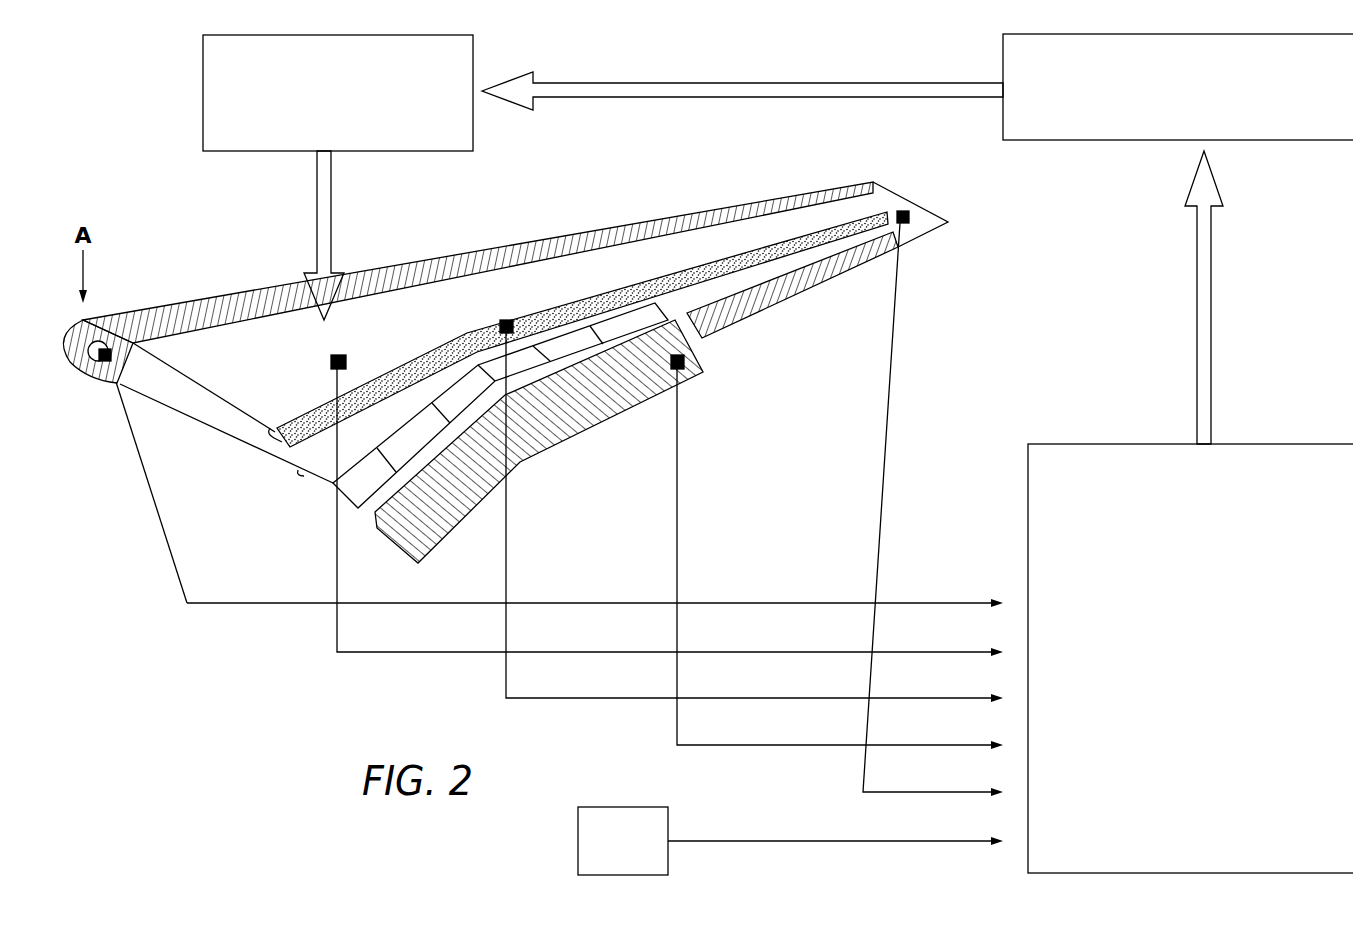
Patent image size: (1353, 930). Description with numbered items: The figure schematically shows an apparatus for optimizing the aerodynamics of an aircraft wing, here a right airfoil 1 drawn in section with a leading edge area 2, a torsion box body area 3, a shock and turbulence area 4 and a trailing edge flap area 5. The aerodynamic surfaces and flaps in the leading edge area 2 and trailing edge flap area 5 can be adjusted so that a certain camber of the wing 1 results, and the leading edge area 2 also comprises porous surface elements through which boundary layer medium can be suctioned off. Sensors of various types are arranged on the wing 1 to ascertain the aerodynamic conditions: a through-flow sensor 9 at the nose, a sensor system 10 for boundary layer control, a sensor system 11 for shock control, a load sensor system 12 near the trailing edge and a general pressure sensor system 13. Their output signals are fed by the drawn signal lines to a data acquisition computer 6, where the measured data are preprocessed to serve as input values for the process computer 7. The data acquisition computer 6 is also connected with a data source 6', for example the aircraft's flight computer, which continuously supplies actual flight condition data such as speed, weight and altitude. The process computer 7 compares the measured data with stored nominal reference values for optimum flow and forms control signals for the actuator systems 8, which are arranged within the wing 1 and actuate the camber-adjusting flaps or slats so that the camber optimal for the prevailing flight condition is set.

The right airfoil 1 is at (162, 217).
The leading edge area 2 is at (220, 297).
The torsion box body area 3 is at (618, 263).
The shock and turbulence area 4 is at (668, 275).
The trailing edge flap area 5 is at (573, 478).
The data acquisition computer 6 is at (1190, 658).
The data source 6' is at (790, 826).
The process computer 7 is at (1166, 109).
The actuator systems 8 is at (320, 108).
The through-flow sensor 9 is at (127, 363).
The sensor system for boundary layer control 10 is at (347, 360).
The sensor system for shock control 11 is at (508, 322).
The load sensor system 12 is at (910, 215).
The general pressure sensor system 13 is at (700, 343).